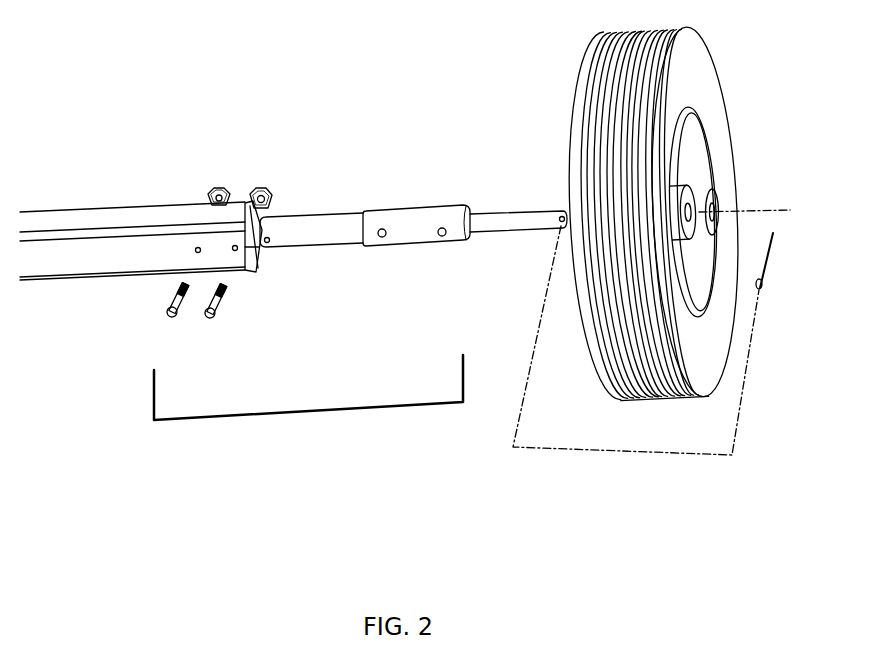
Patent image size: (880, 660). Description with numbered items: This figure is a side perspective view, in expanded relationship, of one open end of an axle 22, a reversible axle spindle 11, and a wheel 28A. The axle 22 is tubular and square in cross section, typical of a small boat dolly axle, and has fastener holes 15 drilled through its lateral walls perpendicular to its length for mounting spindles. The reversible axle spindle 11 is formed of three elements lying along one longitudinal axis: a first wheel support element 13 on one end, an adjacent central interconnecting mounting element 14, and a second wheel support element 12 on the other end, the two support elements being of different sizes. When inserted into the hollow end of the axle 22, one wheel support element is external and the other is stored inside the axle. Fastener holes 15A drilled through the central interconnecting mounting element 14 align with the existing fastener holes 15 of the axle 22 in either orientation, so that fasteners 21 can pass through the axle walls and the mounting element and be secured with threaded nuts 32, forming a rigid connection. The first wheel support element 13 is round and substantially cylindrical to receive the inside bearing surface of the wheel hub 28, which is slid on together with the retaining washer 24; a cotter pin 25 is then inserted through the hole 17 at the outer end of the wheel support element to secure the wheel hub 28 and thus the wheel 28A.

The reversible axle spindle 11 is at (433, 165).
The second wheel support element 12 is at (320, 237).
The first wheel support element 13 is at (503, 225).
The central interconnecting mounting element 14 is at (416, 234).
The fastener holes 15 is at (196, 252).
The fastener holes 15A is at (381, 231).
The hole 17 is at (560, 217).
The fasteners 21 is at (210, 320).
The axle 22 is at (85, 253).
The retaining washer 24 is at (717, 208).
The cotter pin 25 is at (770, 245).
The wheel hub 28 is at (688, 198).
The wheel 28A is at (700, 77).
The threaded nuts 32 is at (258, 190).